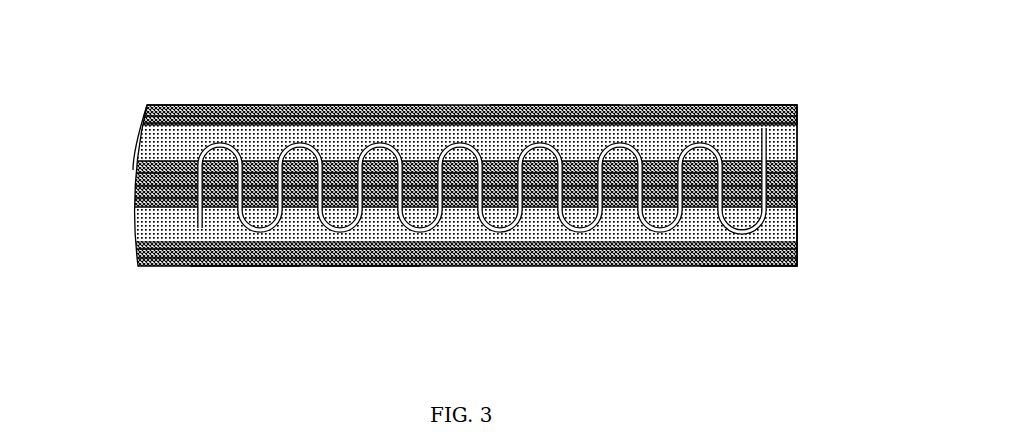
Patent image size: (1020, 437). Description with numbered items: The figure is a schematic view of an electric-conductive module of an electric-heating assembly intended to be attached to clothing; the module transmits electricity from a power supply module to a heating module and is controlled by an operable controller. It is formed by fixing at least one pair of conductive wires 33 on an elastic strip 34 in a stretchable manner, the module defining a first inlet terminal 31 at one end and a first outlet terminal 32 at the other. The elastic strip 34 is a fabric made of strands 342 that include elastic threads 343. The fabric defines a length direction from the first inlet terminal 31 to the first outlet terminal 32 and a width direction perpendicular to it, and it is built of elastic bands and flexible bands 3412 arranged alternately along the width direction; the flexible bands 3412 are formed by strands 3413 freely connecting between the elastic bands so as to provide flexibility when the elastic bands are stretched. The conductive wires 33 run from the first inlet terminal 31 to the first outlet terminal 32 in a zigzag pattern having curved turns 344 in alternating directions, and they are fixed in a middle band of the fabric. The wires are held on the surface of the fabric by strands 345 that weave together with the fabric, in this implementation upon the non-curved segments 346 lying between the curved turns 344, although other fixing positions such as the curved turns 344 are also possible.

The first inlet terminal 31 is at (132, 192).
The first outlet terminal 32 is at (760, 270).
The conductive wires 33 is at (693, 105).
The elastic strip 34 is at (762, 105).
The flexible bands 3412 is at (797, 143).
The strands 3413 is at (557, 105).
The strands 342 is at (195, 104).
The elastic threads 343 is at (145, 117).
The curved turns 344 is at (362, 105).
The strands 345 is at (358, 267).
The non-curved segments 346 is at (457, 267).